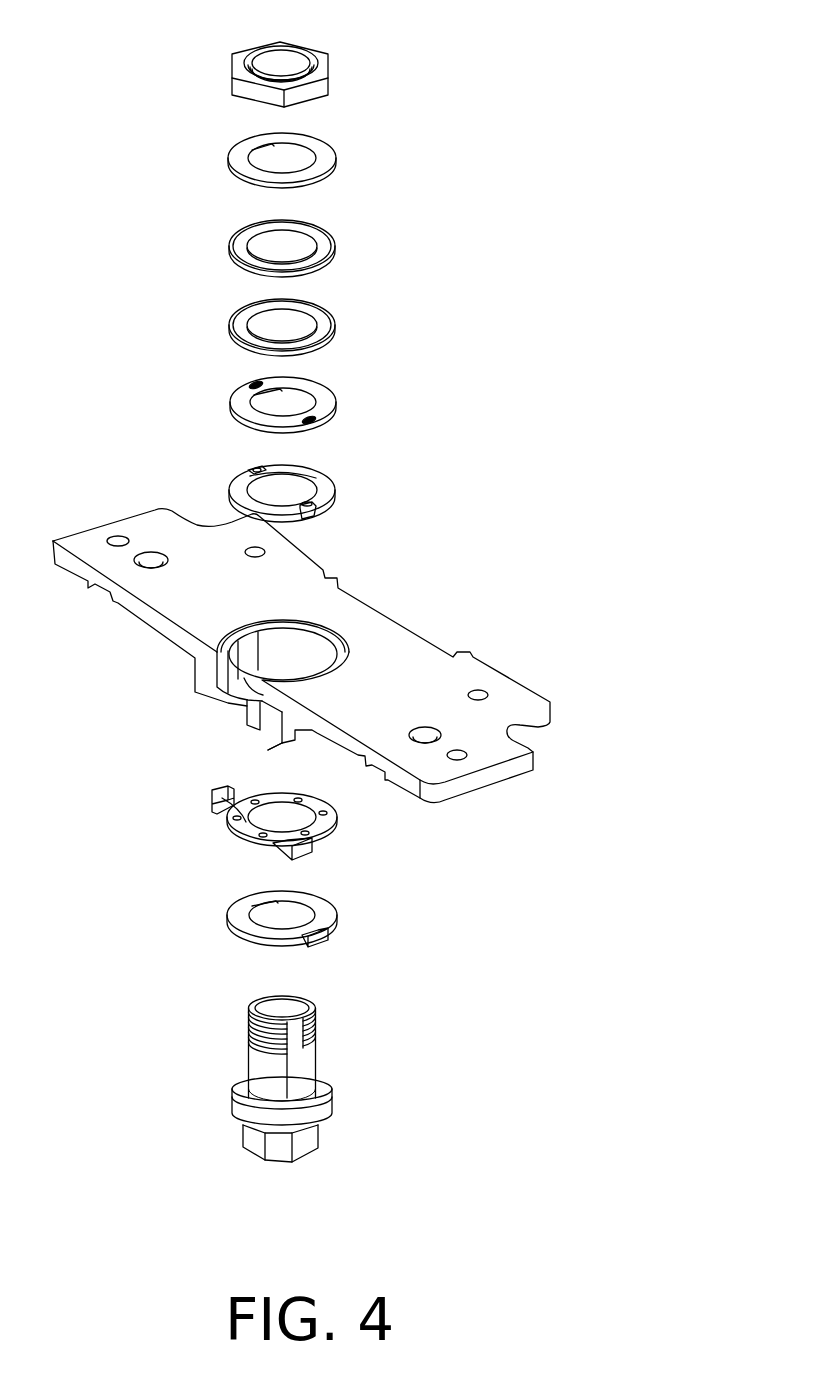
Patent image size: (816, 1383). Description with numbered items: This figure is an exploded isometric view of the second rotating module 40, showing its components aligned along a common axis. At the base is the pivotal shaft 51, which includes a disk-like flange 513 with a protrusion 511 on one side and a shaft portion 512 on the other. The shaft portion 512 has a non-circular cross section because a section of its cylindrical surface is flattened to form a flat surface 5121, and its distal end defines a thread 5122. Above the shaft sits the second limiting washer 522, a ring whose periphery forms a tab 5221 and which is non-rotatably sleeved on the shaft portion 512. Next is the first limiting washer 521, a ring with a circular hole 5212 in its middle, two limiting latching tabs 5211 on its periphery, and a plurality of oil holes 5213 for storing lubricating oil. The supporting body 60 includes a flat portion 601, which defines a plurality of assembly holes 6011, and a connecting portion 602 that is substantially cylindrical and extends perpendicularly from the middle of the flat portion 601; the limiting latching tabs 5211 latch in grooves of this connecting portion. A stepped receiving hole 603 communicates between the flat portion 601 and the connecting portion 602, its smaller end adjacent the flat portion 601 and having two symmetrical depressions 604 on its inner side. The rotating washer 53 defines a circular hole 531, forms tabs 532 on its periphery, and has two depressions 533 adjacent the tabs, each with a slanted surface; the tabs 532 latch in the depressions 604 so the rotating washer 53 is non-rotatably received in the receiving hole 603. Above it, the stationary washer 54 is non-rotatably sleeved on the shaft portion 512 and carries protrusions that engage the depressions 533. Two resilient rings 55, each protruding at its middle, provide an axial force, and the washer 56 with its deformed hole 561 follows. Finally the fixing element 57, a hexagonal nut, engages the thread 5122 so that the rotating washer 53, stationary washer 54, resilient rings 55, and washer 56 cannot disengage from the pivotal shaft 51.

The second rotating module 40 is at (466, 209).
The fixing element 57 is at (316, 60).
The washer 56 is at (279, 142).
The deformed hole 561 is at (263, 160).
The resilient rings 55 is at (340, 238).
The stationary washer 54 is at (325, 400).
The rotating washer 53 is at (292, 474).
The circular hole 531 is at (289, 488).
The tabs 532 is at (315, 506).
The depressions 533 is at (256, 466).
The supporting body 60 is at (333, 685).
The flat portion 601 is at (422, 680).
The connecting portion 602 is at (282, 742).
The receiving hole 603 is at (313, 652).
The depressions 604 is at (250, 640).
The assembly holes 6011 is at (462, 756).
The first limiting washer 521 is at (277, 839).
The limiting latching tabs 5211 is at (305, 848).
The circular hole 5212 is at (300, 816).
The oil holes 5213 is at (213, 794).
The second limiting washer 522 is at (286, 923).
The tab 5221 is at (320, 934).
The pivotal shaft 51 is at (255, 1072).
The shaft portion 512 is at (270, 1040).
The flat surface 5121 is at (300, 1062).
The thread 5122 is at (248, 1017).
The flange 513 is at (245, 1110).
The protrusion 511 is at (253, 1141).